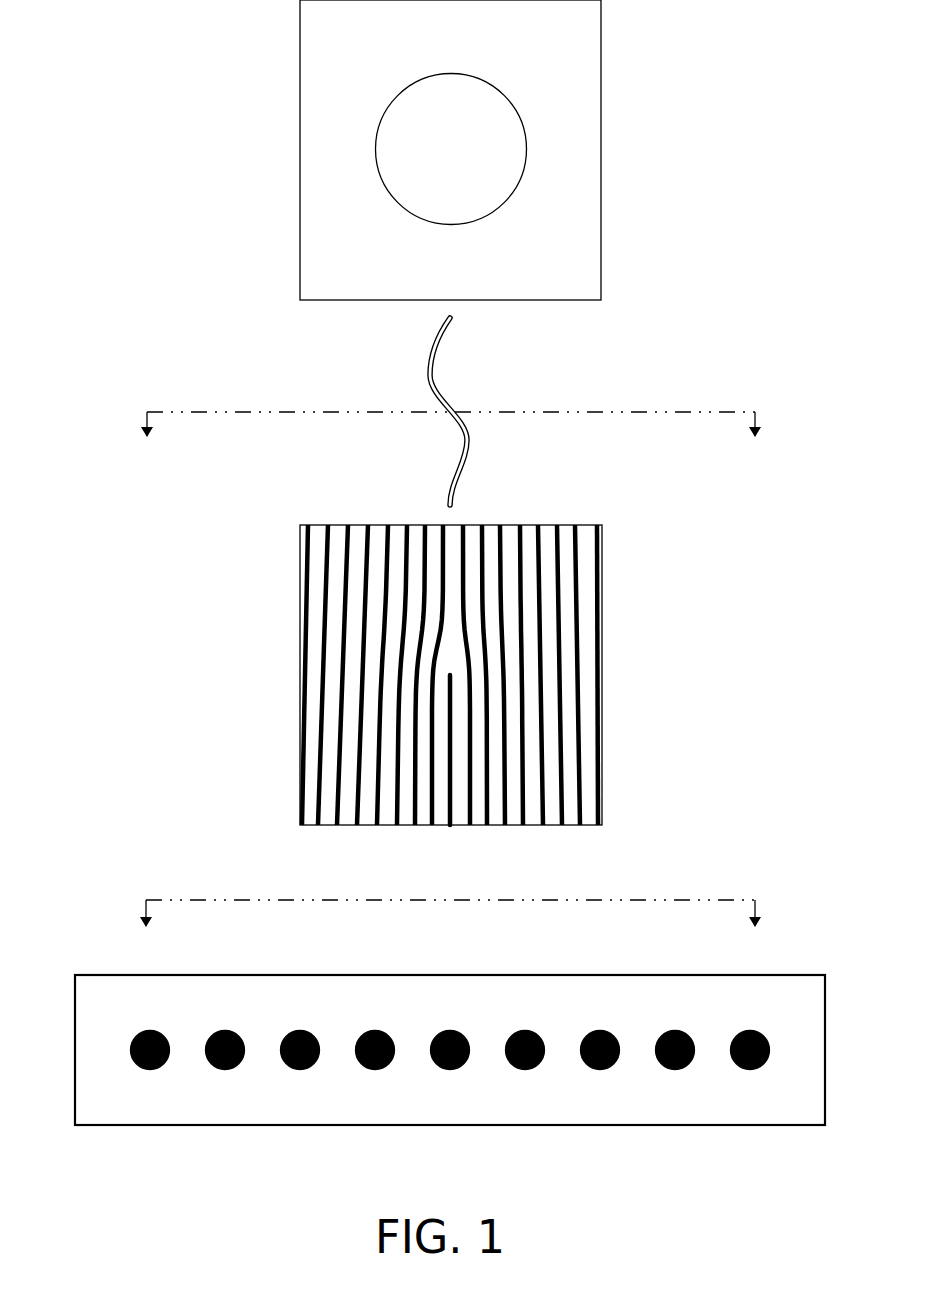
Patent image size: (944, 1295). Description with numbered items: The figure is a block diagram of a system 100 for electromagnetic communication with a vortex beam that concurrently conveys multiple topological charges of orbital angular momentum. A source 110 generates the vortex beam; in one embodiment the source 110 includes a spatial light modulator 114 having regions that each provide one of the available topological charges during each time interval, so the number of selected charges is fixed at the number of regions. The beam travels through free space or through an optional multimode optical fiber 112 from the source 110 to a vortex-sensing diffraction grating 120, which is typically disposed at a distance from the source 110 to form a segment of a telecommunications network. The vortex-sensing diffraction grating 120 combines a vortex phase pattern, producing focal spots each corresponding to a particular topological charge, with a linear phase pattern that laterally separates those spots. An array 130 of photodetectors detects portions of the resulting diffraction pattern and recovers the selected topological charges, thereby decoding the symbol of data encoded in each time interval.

The system 100 is at (110, 38).
The source 110 is at (300, 37).
The spatial light modulator 114 is at (383, 115).
The multimode optical fiber 112 is at (428, 375).
The vortex-sensing diffraction grating 120 is at (300, 562).
The array of photodetectors 130 is at (95, 975).